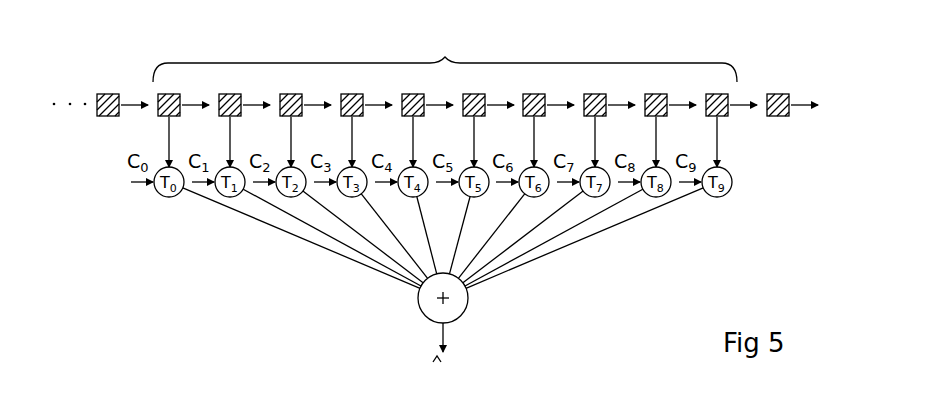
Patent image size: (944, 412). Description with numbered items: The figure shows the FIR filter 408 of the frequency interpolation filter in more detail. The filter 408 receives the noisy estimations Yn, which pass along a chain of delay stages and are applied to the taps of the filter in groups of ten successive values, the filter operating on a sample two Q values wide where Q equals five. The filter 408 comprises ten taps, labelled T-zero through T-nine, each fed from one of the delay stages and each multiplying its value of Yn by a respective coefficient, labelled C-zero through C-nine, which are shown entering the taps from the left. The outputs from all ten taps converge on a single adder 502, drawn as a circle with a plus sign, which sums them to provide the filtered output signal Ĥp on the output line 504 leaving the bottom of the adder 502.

The FIR filter 408 is at (692, 45).
The adder 502 is at (459, 309).
The output line 504 is at (441, 333).